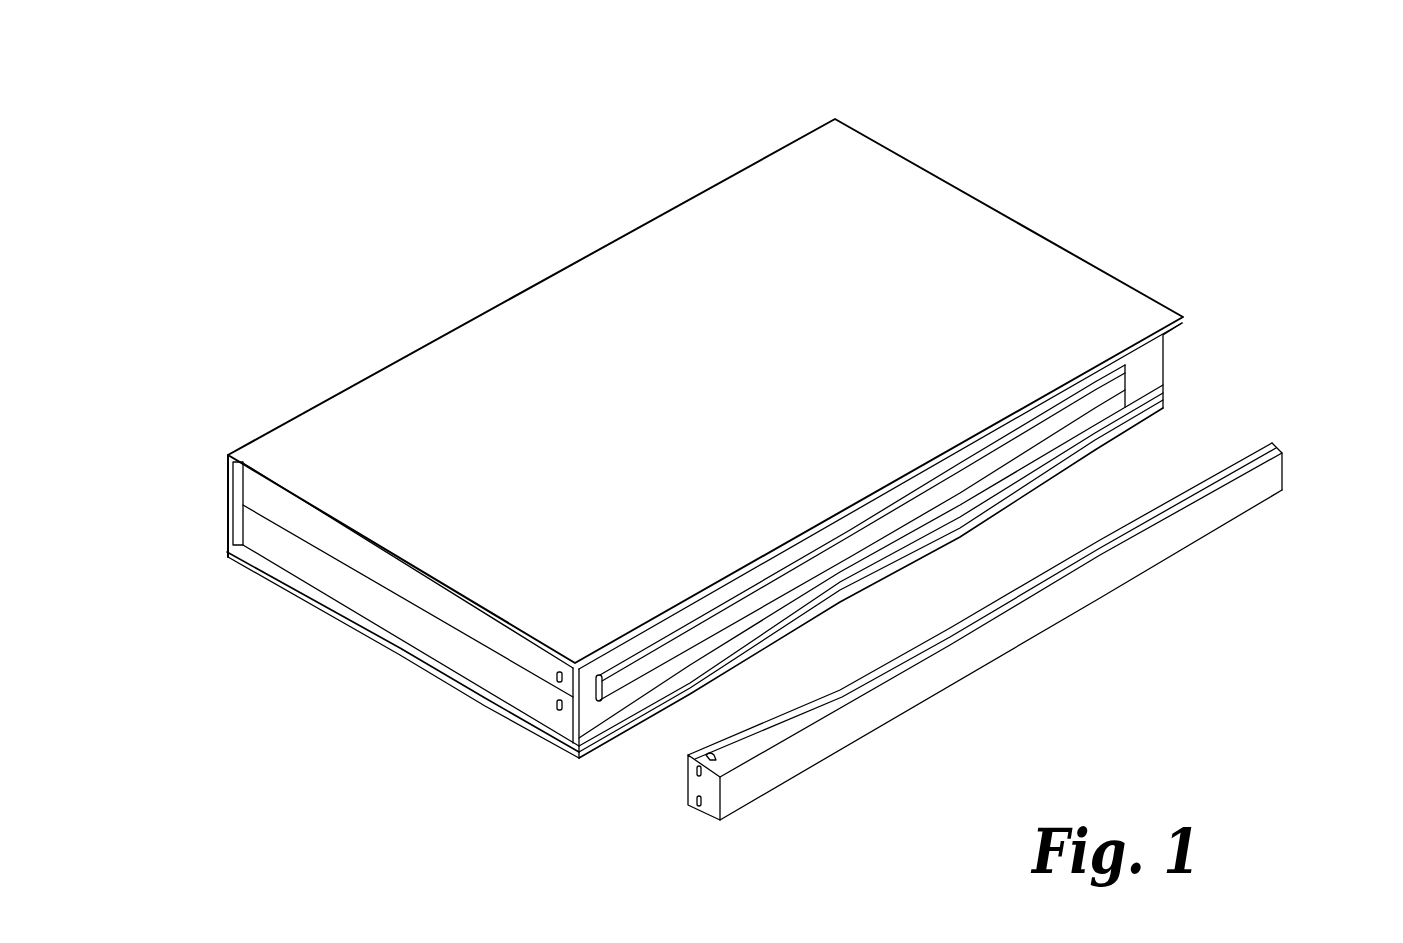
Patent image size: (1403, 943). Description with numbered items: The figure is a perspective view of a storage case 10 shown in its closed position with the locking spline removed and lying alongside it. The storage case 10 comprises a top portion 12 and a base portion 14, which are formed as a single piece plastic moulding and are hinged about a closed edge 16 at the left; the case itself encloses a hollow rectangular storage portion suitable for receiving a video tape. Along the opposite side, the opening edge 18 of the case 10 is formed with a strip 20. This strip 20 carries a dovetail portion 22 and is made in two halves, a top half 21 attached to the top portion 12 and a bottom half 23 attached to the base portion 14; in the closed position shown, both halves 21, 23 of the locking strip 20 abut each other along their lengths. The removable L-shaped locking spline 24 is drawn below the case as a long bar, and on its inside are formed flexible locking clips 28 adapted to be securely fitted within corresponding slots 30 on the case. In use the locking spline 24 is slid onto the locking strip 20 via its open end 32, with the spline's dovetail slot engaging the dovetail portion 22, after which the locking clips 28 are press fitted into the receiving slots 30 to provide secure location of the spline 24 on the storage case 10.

The storage case 10 is at (941, 114).
The top portion 12 is at (1060, 278).
The base portion 14 is at (285, 553).
The closed edge 16 is at (228, 492).
The opening edge 18 is at (1166, 377).
The strip 20 is at (1117, 410).
The top half 21 is at (818, 557).
The dovetail portion 22 is at (597, 690).
The bottom half 23 is at (818, 573).
The locking spline 24 is at (840, 739).
The locking clips 28 is at (716, 757).
The slots 30 is at (558, 708).
The open end 32 is at (1280, 477).